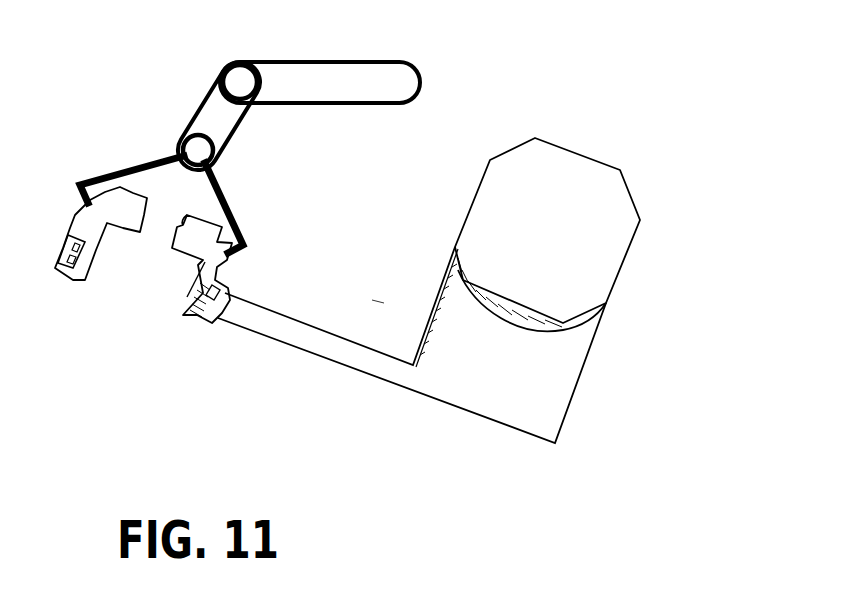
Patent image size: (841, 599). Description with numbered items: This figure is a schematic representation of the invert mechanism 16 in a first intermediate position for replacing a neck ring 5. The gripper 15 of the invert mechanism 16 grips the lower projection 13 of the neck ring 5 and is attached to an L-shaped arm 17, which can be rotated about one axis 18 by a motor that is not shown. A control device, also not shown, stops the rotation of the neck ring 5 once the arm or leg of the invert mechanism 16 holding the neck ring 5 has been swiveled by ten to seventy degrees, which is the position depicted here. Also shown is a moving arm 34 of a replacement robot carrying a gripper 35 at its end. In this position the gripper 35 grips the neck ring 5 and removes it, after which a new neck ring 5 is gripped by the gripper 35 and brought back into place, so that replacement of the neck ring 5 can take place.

The moving arm 34 is at (288, 70).
The gripper 35 is at (145, 157).
The lower projection 13 is at (205, 293).
The neck ring 5 is at (233, 277).
The gripper 15 is at (205, 320).
The invert mechanism 16 is at (378, 305).
The L-shaped arm 17 is at (365, 363).
The axis 18 is at (610, 255).